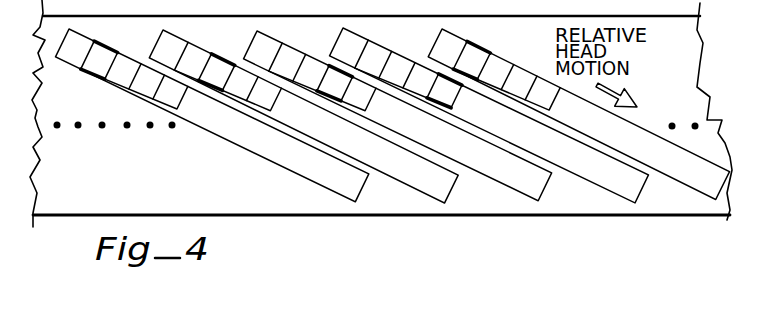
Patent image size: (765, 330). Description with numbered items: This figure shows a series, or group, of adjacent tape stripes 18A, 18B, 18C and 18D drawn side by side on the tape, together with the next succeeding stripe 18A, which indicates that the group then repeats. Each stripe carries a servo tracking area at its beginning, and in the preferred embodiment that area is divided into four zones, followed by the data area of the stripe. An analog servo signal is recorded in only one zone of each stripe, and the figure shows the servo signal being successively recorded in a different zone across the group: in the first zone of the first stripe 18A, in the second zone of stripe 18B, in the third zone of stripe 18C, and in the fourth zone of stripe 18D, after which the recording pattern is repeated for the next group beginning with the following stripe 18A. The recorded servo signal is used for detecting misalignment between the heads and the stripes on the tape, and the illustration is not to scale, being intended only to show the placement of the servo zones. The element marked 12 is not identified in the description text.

The disk surface 12 is at (346, 216).
The stripe 18A is at (327, 190).
The stripe 18B is at (430, 192).
The stripe 18C is at (523, 192).
The stripe 18D is at (618, 198).